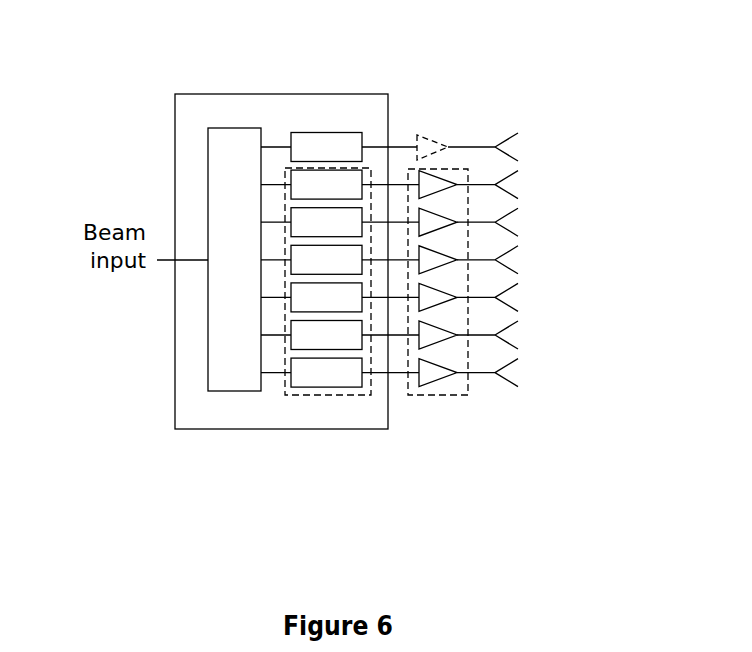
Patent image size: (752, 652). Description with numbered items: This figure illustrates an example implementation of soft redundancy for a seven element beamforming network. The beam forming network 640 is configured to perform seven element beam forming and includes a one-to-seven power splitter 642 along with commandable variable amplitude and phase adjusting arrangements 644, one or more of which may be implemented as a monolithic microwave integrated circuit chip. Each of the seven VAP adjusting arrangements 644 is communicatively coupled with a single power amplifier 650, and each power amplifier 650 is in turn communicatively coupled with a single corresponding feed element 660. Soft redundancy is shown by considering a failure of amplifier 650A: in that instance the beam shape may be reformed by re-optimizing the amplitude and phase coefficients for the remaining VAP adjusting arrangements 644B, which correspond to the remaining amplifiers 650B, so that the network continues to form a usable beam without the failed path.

The beam forming network 640 is at (147, 58).
The 1:7 power splitter 642 is at (208, 372).
The variable amplitude and phase (VAP) adjusting arrangements 644 is at (283, 170).
The remaining VAP adjusting arrangements 644B is at (338, 396).
The power amplifier 650 is at (450, 150).
The amplifier 650A is at (448, 143).
The remaining amplifiers 650B is at (470, 391).
The feed element 660 is at (509, 190).